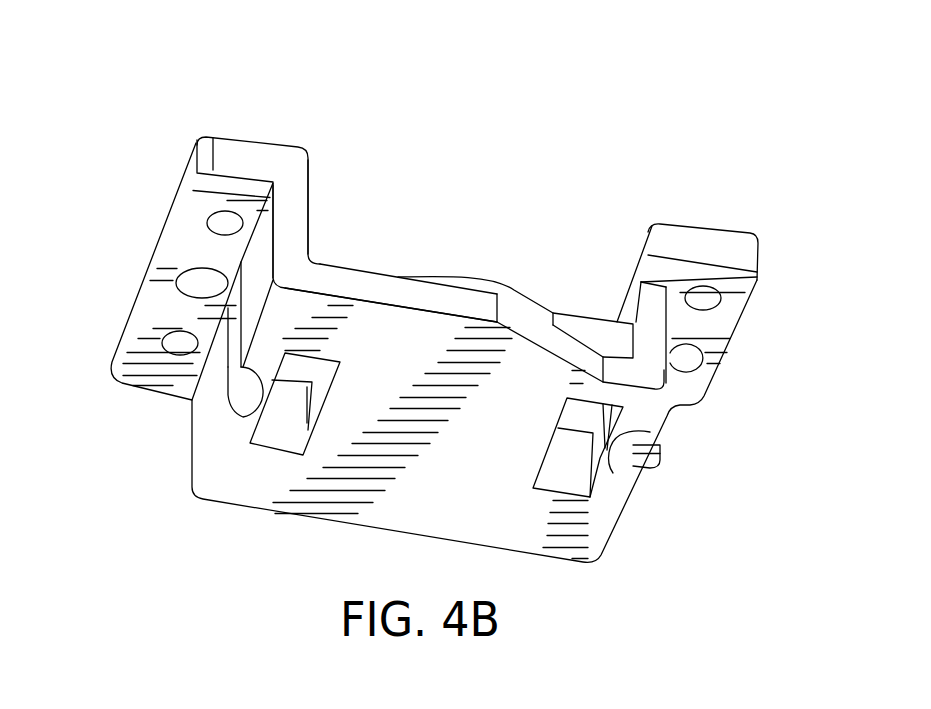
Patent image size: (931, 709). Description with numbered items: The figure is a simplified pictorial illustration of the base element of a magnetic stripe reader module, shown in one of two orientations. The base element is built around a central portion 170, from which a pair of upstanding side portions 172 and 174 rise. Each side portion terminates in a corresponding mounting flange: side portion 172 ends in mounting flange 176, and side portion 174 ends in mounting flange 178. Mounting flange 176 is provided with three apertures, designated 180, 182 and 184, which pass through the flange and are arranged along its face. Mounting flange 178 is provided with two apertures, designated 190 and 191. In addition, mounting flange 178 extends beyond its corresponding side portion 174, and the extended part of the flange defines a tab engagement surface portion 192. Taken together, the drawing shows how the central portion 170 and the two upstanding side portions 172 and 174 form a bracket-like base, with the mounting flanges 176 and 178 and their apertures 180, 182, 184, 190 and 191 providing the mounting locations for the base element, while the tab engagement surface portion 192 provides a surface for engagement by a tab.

The central portion 170 is at (375, 288).
The side portion 172 is at (290, 217).
The side portion 174 is at (650, 315).
The mounting flange 176 is at (243, 163).
The mounting flange 178 is at (660, 240).
The aperture 180 is at (173, 343).
The aperture 182 is at (193, 280).
The aperture 184 is at (218, 223).
The aperture 190 is at (684, 362).
The aperture 191 is at (703, 300).
The tab engagement surface portion 192 is at (668, 266).